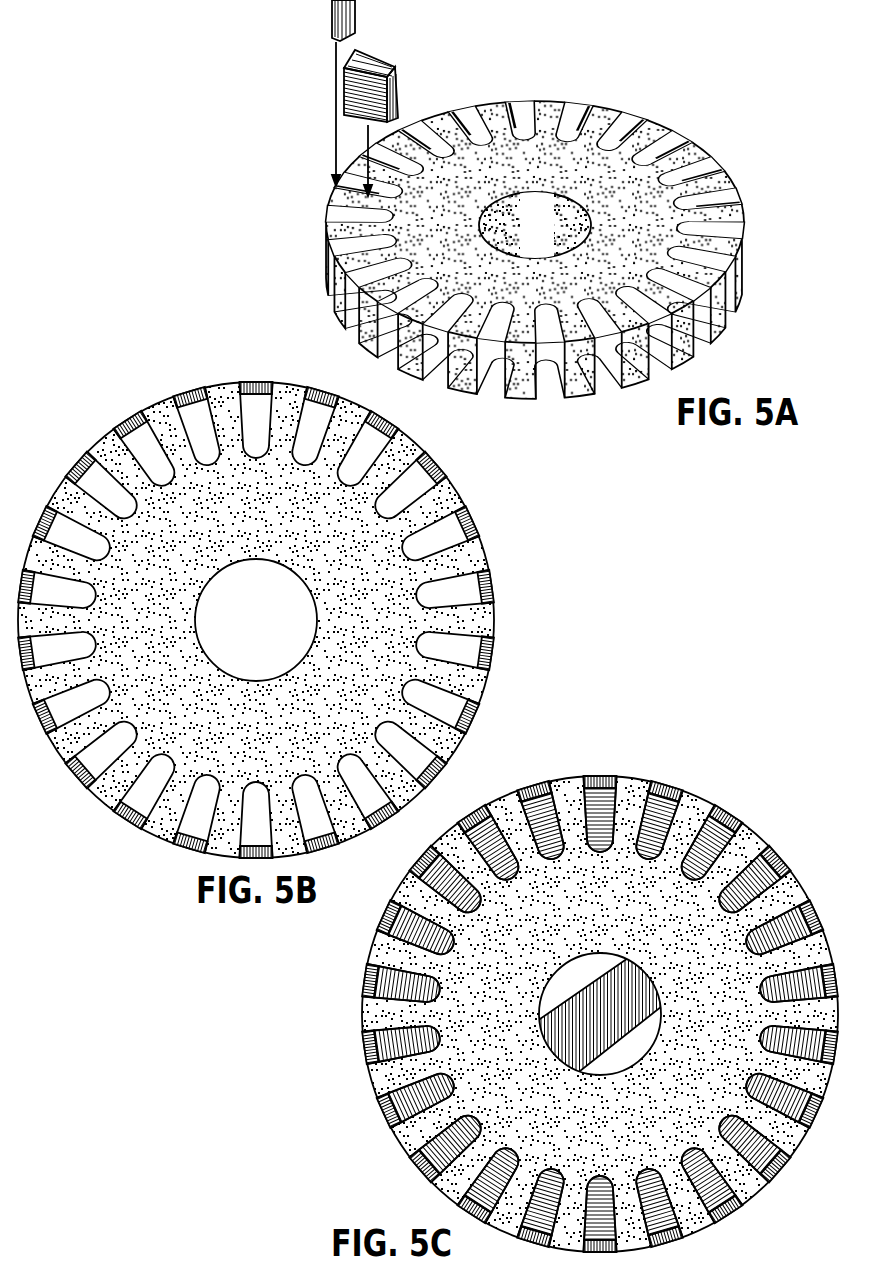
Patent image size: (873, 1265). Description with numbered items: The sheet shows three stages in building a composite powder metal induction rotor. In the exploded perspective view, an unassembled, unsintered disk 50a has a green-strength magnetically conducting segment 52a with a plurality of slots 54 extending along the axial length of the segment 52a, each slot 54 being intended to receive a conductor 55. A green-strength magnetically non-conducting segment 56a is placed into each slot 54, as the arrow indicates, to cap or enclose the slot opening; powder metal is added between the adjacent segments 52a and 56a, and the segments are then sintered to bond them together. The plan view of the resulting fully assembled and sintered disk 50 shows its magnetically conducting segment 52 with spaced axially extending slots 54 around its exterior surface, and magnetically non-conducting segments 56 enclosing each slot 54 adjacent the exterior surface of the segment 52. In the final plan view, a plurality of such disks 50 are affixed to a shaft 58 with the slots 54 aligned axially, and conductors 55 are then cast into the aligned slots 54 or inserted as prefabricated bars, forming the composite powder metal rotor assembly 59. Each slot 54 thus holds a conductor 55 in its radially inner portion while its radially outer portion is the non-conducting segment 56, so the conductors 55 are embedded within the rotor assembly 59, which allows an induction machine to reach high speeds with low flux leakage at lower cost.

In FIG. 5B, the disk 50 is at (304, 608).
In FIG. 5A, the unsintered disk 50a is at (534, 199).
In FIG. 5B, the magnetically conducting segment 52 is at (360, 571).
In FIG. 5C, the magnetically conducting segment 52 is at (600, 1014).
In FIG. 5A, the green-strength magnetically conducting segment 52a is at (649, 234).
In FIG. 5A, the slot 54 is at (519, 120).
In FIG. 5B, the slot 54 is at (203, 437).
In FIG. 5C, the slot 54 is at (381, 1052).
In FIG. 5A, the conductor 55 is at (344, 95).
In FIG. 5C, the conductor 55 is at (692, 806).
In FIG. 5B, the magnetically non-conducting segment 56 is at (134, 431).
In FIG. 5C, the magnetically non-conducting segment 56 is at (598, 779).
In FIG. 5A, the green-strength magnetically non-conducting segment 56a is at (332, 22).
In FIG. 5C, the shaft 58 is at (607, 1021).
In FIG. 5C, the rotor assembly 59 is at (576, 998).